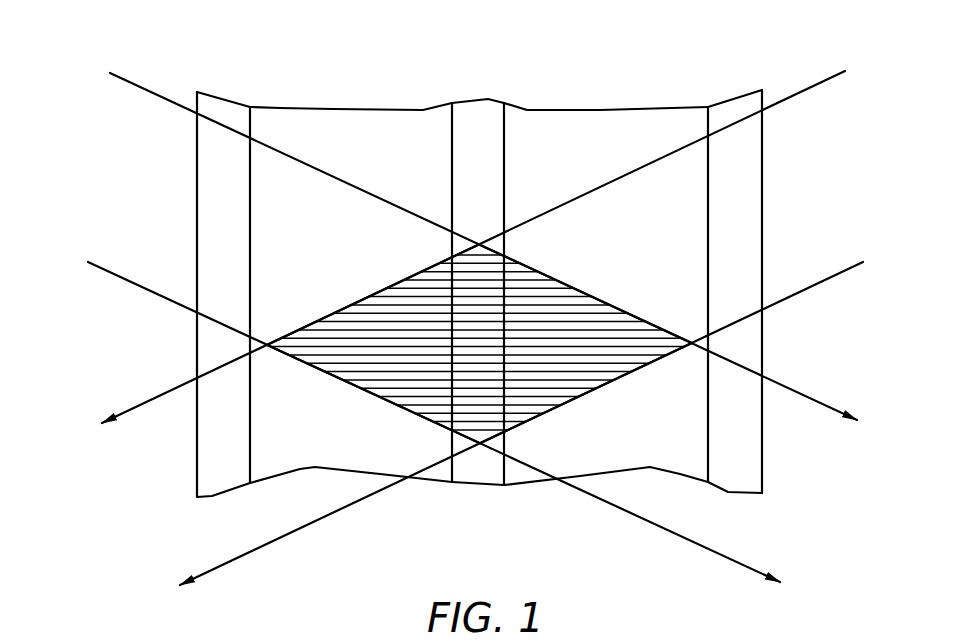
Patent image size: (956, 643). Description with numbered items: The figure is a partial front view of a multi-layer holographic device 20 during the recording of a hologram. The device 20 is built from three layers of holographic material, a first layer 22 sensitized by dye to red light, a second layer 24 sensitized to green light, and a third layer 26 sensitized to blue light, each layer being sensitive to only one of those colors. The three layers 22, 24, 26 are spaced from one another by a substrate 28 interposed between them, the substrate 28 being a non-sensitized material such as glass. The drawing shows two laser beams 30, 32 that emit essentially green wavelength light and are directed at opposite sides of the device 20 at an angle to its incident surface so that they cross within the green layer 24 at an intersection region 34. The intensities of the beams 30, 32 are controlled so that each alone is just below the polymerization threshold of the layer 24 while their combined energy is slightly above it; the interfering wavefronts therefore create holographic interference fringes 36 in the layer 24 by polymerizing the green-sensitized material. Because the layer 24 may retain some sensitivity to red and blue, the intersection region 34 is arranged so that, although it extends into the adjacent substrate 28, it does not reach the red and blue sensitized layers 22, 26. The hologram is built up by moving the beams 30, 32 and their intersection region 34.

The multi-layer holographic device 20 is at (479, 251).
The first layer of holographic material 22 is at (215, 197).
The second layer of holographic material 24 is at (492, 271).
The third layer of holographic material 26 is at (761, 291).
The substrate 28 is at (479, 272).
The laser beam 30 is at (434, 422).
The laser beam 32 is at (534, 423).
The intersection region 34 is at (479, 349).
The holographic interference fringes 36 is at (535, 283).